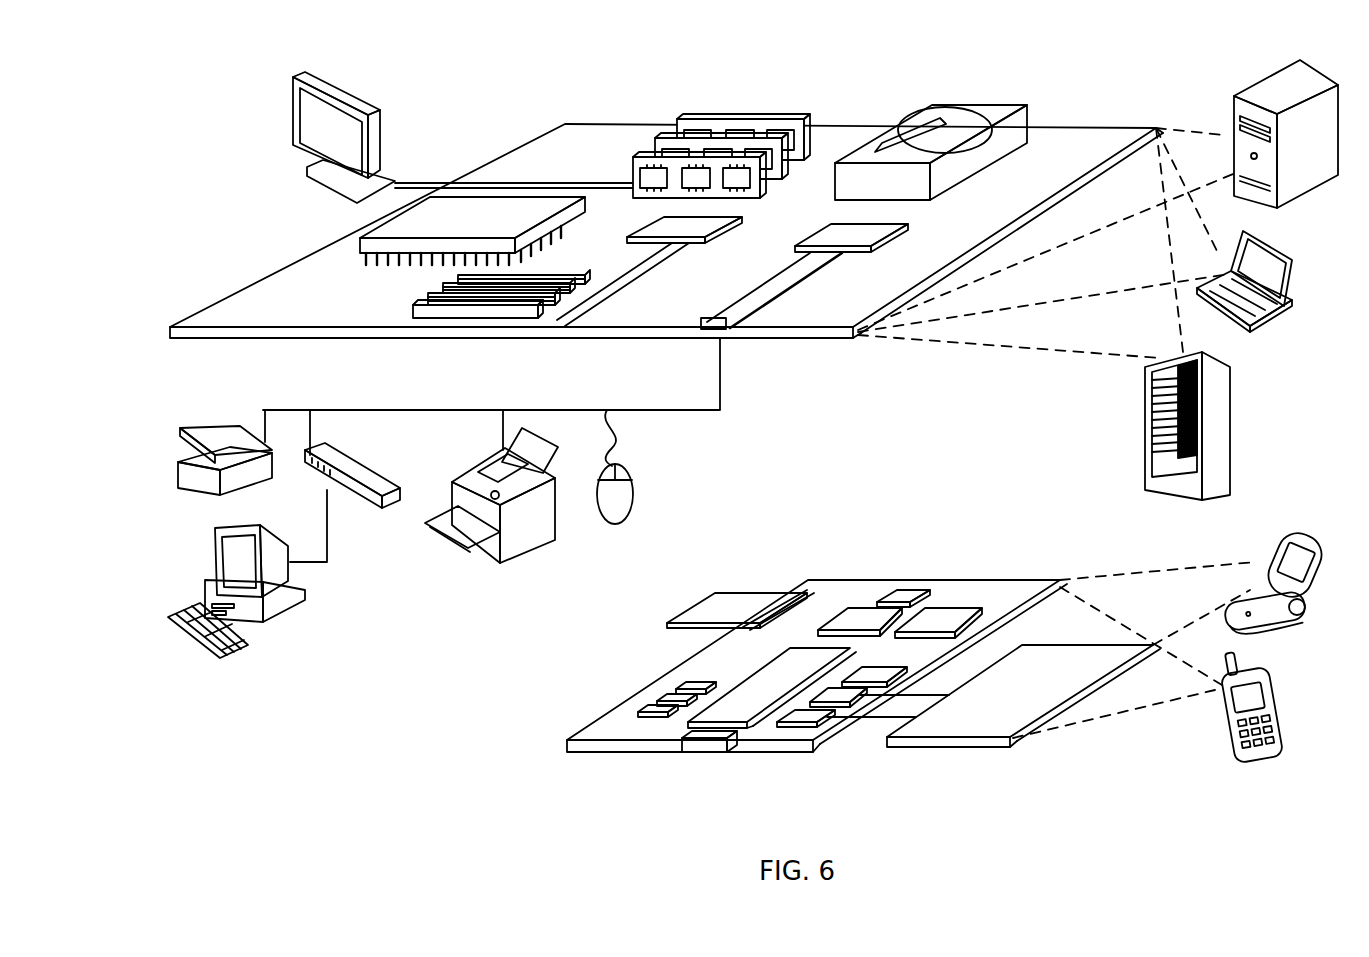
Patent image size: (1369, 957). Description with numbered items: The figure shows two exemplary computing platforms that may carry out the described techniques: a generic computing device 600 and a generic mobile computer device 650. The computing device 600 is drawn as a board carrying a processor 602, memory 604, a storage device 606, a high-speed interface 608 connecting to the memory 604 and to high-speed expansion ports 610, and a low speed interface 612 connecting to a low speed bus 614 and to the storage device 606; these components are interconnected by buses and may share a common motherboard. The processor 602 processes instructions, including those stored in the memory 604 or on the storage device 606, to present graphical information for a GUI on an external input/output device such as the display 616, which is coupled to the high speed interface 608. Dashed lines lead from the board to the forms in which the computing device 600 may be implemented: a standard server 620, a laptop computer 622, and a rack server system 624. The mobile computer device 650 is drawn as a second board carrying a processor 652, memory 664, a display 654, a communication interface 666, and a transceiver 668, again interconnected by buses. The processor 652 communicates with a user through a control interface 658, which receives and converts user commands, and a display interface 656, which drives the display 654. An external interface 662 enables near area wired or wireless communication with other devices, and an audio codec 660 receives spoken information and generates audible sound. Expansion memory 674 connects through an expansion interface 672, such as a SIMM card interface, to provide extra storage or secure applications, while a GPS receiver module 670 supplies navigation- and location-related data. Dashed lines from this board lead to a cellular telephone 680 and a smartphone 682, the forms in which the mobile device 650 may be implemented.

The computing device 600 is at (486, 96).
The processor 602 is at (360, 240).
The memory 604 is at (682, 155).
The storage device 606 is at (918, 116).
The high-speed interface 608 is at (598, 185).
The high-speed expansion ports 610 is at (420, 298).
The low speed interface 612 is at (824, 236).
The low speed bus 614 is at (733, 335).
The display 616 is at (293, 75).
The standard server 620 is at (1236, 104).
The laptop computer 622 is at (1302, 256).
The rack server system 624 is at (1146, 452).
The mobile computer device 650 is at (540, 752).
The processor 652 is at (745, 735).
The display 654 is at (980, 724).
The display interface 656 is at (818, 728).
The control interface 658 is at (852, 708).
The audio codec 660 is at (874, 688).
The external interface 662 is at (707, 755).
The memory 664 is at (660, 698).
The communication interface 666 is at (862, 618).
The transceiver 668 is at (938, 618).
The GPS receiver module 670 is at (917, 588).
The expansion interface 672 is at (793, 597).
The expansion memory 674 is at (717, 595).
The cellular telephone 680 is at (1283, 537).
The smartphone 682 is at (1226, 712).